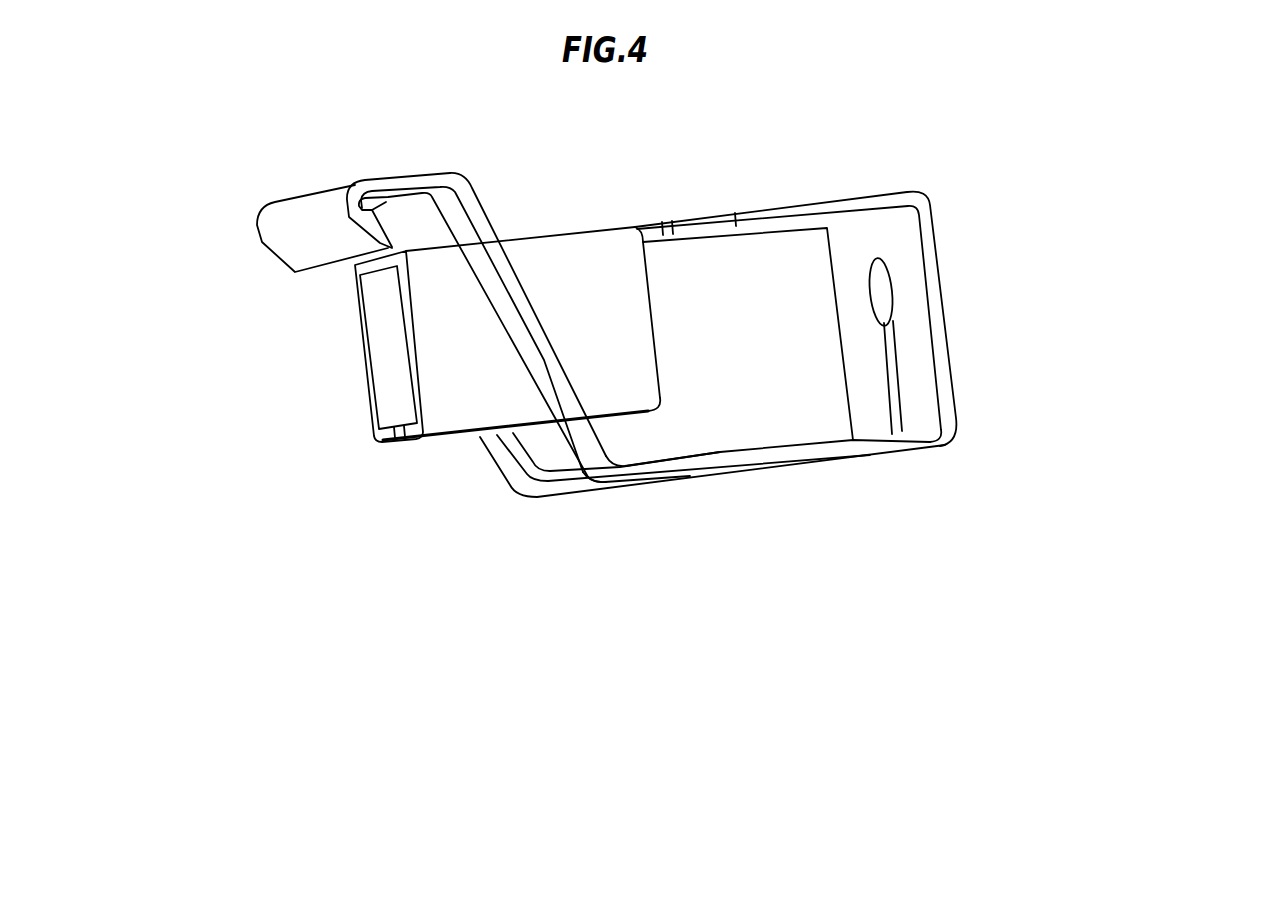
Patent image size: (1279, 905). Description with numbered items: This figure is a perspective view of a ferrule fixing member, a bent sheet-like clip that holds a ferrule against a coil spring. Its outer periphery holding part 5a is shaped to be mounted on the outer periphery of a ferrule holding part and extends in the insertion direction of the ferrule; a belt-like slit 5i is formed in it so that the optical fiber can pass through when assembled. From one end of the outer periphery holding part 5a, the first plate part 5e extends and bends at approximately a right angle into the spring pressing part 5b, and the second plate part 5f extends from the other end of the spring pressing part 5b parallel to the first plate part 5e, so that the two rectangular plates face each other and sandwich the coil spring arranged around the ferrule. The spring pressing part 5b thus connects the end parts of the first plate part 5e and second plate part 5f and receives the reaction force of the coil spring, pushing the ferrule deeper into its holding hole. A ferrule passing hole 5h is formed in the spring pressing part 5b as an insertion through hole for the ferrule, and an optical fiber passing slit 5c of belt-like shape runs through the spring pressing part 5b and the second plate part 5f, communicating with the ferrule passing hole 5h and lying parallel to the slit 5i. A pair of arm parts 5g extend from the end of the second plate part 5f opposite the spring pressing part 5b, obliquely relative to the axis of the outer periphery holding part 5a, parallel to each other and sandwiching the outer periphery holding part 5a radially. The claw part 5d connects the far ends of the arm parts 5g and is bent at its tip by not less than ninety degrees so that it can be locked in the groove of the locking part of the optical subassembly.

The outer periphery holding part 5a is at (567, 260).
The spring pressing part 5b is at (928, 248).
The optical fiber passing slit 5c is at (892, 380).
The claw part 5d is at (292, 257).
The first plate part 5e is at (817, 207).
The second plate part 5f is at (893, 442).
The arm parts 5g is at (580, 447).
The ferrule passing hole 5h is at (880, 293).
The slit 5i is at (393, 443).